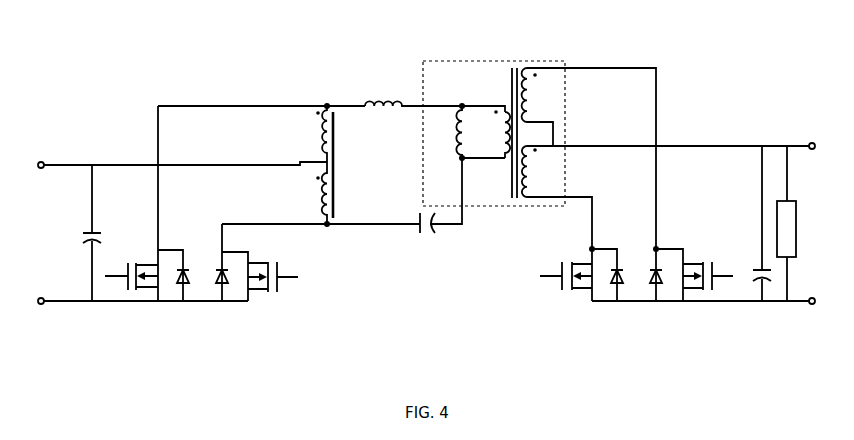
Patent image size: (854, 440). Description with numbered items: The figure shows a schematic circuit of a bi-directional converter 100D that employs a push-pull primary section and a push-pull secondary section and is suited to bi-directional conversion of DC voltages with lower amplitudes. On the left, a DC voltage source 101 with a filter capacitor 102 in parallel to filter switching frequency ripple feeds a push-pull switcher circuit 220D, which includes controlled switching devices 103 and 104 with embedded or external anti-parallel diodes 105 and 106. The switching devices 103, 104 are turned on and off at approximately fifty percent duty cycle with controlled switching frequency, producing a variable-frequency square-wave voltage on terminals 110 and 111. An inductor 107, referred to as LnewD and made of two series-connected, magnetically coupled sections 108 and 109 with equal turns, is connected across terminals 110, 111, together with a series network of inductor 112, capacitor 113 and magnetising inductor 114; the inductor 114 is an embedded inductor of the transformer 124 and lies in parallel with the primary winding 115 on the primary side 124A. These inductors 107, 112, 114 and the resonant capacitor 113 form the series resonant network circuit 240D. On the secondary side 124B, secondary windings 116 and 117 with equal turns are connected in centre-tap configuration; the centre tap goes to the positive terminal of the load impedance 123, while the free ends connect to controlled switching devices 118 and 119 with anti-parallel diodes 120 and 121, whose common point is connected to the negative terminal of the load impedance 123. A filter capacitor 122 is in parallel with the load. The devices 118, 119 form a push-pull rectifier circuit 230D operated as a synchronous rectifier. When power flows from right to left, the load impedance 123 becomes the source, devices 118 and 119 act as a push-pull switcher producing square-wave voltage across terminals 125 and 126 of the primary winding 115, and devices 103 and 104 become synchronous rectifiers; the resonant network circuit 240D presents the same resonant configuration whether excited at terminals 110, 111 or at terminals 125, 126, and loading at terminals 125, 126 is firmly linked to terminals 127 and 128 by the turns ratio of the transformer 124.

The bi-directional converter 100D is at (404, 77).
The DC voltage source 101 is at (48, 169).
The filter capacitor 102 is at (88, 232).
The controlled switching device 103 is at (127, 268).
The controlled switching device 104 is at (250, 262).
The anti-parallel diode 105 is at (187, 275).
The anti-parallel diode 106 is at (219, 270).
The inductor 107 is at (339, 158).
The inductor section 108 is at (322, 191).
The inductor section 109 is at (322, 137).
The terminal 110 is at (325, 103).
The terminal 111 is at (327, 228).
The inductor 112 is at (386, 102).
The capacitor 113 is at (424, 235).
The magnetising inductor 114 is at (458, 140).
The primary winding 115 is at (502, 125).
The secondary winding 116 is at (526, 170).
The secondary winding 117 is at (524, 95).
The controlled switching device 118 is at (578, 291).
The controlled switching device 119 is at (695, 292).
The anti-parallel diode 120 is at (615, 284).
The anti-parallel diode 121 is at (652, 268).
The filter capacitor 122 is at (758, 270).
The load impedance 123 is at (797, 236).
The transformer 124 is at (511, 61).
The primary side 124A is at (490, 194).
The secondary side 124B is at (542, 184).
The terminal 125 is at (461, 104).
The terminal 126 is at (461, 161).
The terminal 127 is at (594, 246).
The terminal 128 is at (658, 246).
The push-pull switcher circuit 220D is at (197, 322).
The push-pull rectifier circuit 230D is at (633, 323).
The series resonant network circuit 240D is at (380, 232).